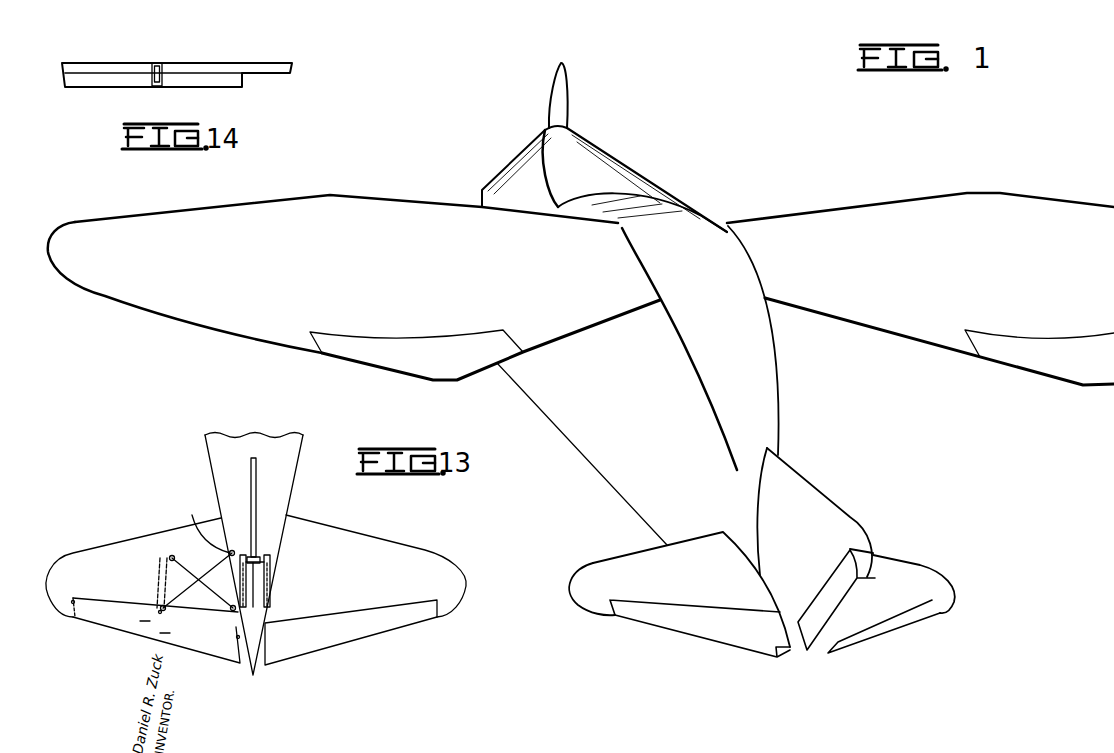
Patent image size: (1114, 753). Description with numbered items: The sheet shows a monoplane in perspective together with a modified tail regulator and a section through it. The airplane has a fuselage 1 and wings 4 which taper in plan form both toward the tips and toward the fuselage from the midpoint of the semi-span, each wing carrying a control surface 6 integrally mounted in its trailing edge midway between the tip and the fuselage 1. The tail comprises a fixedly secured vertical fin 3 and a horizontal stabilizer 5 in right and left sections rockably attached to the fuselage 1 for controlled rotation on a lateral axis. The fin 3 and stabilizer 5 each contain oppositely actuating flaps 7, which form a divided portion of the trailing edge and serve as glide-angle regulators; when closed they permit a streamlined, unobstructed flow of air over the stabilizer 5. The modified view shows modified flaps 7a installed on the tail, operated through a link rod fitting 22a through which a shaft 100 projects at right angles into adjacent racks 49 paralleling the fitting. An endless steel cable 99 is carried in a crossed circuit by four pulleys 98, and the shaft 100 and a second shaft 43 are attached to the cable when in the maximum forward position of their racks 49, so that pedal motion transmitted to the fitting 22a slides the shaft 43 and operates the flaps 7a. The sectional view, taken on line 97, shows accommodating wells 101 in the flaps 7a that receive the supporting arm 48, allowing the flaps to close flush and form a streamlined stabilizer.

In FIG. 1, the fuselage 1 is at (773, 397).
In FIG. 13, the fuselage 1 is at (290, 473).
In FIG. 1, the vertical fin 3 is at (828, 510).
In FIG. 1, the wings 4 is at (360, 210).
In FIG. 1, the horizontal stabilizer 5 is at (624, 566).
In FIG. 13, the horizontal stabilizer 5 is at (122, 549).
In FIG. 1, the control surface 6 is at (411, 360).
In FIG. 1, the oppositely actuating flaps 7 is at (630, 614).
In FIG. 13, the modified flaps 7a is at (204, 647).
In FIG. 14, the modified flaps 7a is at (219, 78).
In FIG. 13, the link rod fitting 22a is at (256, 505).
In FIG. 13, the shaft 43 is at (164, 556).
In FIG. 13, the supporting arm 48 is at (73, 602).
In FIG. 14, the supporting arm 48 is at (157, 83).
In FIG. 13, the racks 49 is at (155, 578).
In FIG. 13, the section line 97 is at (153, 630).
In FIG. 13, the pulleys 98 is at (230, 609).
In FIG. 13, the endless steel cable 99 is at (193, 568).
In FIG. 13, the shaft 100 is at (285, 558).
In FIG. 14, the accommodating wells 101 is at (150, 63).